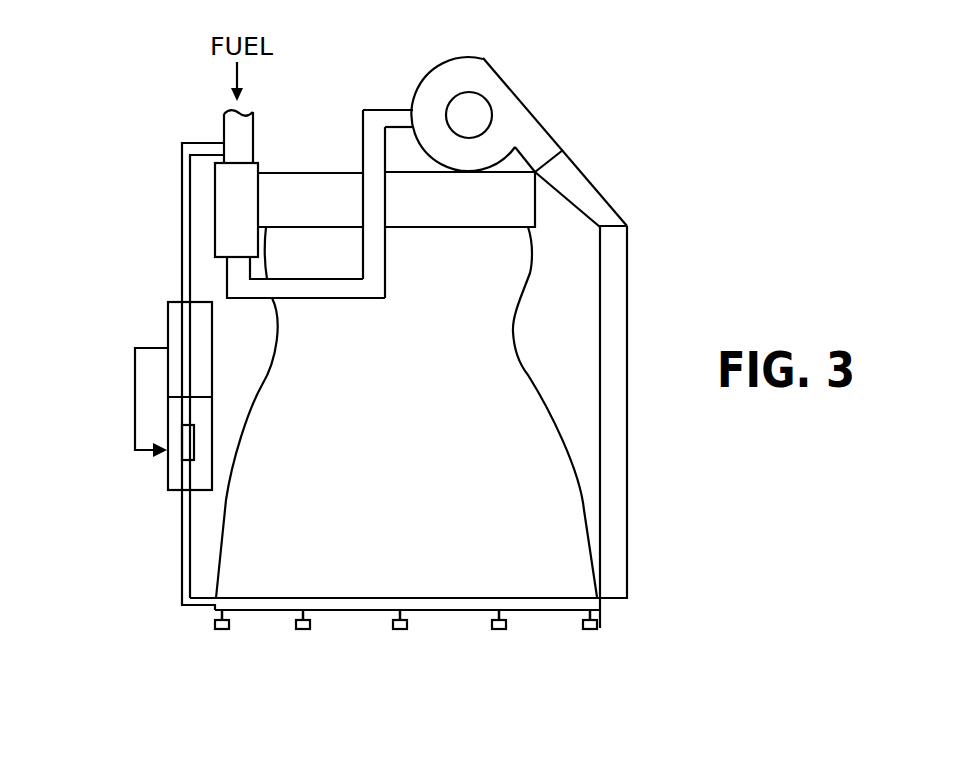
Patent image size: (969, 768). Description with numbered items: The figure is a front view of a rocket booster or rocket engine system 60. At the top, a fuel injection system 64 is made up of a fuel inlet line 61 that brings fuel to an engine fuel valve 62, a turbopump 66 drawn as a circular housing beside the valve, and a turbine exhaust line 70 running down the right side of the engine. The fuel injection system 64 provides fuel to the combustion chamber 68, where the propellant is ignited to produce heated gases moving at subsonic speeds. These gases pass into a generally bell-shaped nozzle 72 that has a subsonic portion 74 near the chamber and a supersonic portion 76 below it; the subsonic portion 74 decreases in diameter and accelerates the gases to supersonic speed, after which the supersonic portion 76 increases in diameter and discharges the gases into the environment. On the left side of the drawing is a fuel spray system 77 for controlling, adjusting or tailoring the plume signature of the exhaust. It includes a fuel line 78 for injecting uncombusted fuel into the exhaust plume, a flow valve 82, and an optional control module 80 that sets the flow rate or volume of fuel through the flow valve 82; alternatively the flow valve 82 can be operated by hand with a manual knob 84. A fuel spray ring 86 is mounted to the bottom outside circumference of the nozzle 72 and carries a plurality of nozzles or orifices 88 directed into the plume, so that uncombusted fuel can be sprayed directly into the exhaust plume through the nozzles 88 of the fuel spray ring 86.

The rocket engine system 60 is at (599, 49).
The fuel inlet line 61 is at (254, 125).
The engine fuel valve 62 is at (236, 210).
The fuel injection system 64 is at (376, 68).
The turbopump 66 is at (484, 59).
The combustion chamber 68 is at (460, 199).
The turbine exhaust line 70 is at (627, 470).
The nozzle 72 is at (406, 412).
The subsonic portion 74 is at (530, 273).
The supersonic portion 76 is at (528, 375).
The fuel spray system 77 is at (115, 324).
The fuel line 78 is at (182, 246).
The control module 80 is at (190, 396).
The flow valve 82 is at (168, 483).
The manual knob 84 is at (195, 425).
The fuel spray ring 86 is at (348, 598).
The nozzles or orifices 88 is at (590, 631).